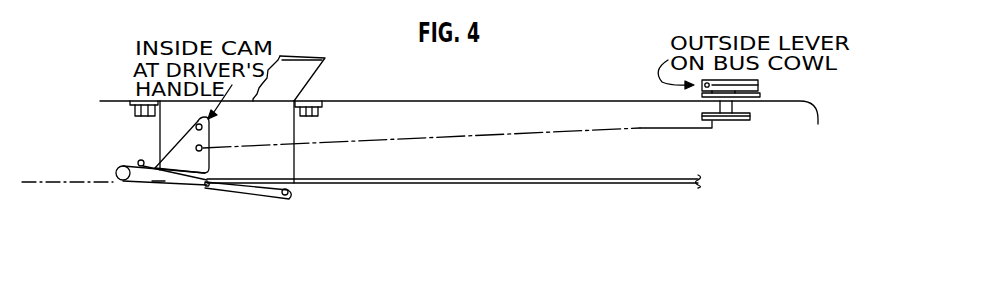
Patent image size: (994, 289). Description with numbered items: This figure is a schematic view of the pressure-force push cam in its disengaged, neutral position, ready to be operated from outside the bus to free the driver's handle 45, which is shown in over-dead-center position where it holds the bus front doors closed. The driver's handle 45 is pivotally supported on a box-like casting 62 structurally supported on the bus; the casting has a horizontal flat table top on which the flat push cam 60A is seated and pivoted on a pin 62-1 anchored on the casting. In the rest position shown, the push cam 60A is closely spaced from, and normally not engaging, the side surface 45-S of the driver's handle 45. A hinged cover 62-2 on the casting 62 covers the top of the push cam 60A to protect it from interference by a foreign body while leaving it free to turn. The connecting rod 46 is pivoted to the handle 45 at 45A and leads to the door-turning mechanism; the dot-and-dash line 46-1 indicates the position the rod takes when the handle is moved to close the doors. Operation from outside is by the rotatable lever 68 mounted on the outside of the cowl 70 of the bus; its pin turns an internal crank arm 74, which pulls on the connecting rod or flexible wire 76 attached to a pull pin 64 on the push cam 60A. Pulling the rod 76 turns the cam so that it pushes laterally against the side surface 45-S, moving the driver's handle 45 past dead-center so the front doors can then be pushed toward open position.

The box-like casting 62 is at (157, 120).
The push cam 60A is at (170, 150).
The pin 62-1 is at (204, 124).
The pull pin 64 is at (203, 150).
The hinged cover 62-2 is at (298, 76).
The connecting rod 46 is at (397, 178).
The connecting rod position 46-1 is at (37, 183).
The side surface 45-S is at (143, 167).
The pivot 45A is at (206, 186).
The driver's control handle 45 is at (250, 190).
The cowl 70 is at (578, 101).
The pull rod 76 is at (583, 132).
The rotatable lever 68 is at (758, 85).
The internal crank arm 74 is at (740, 120).